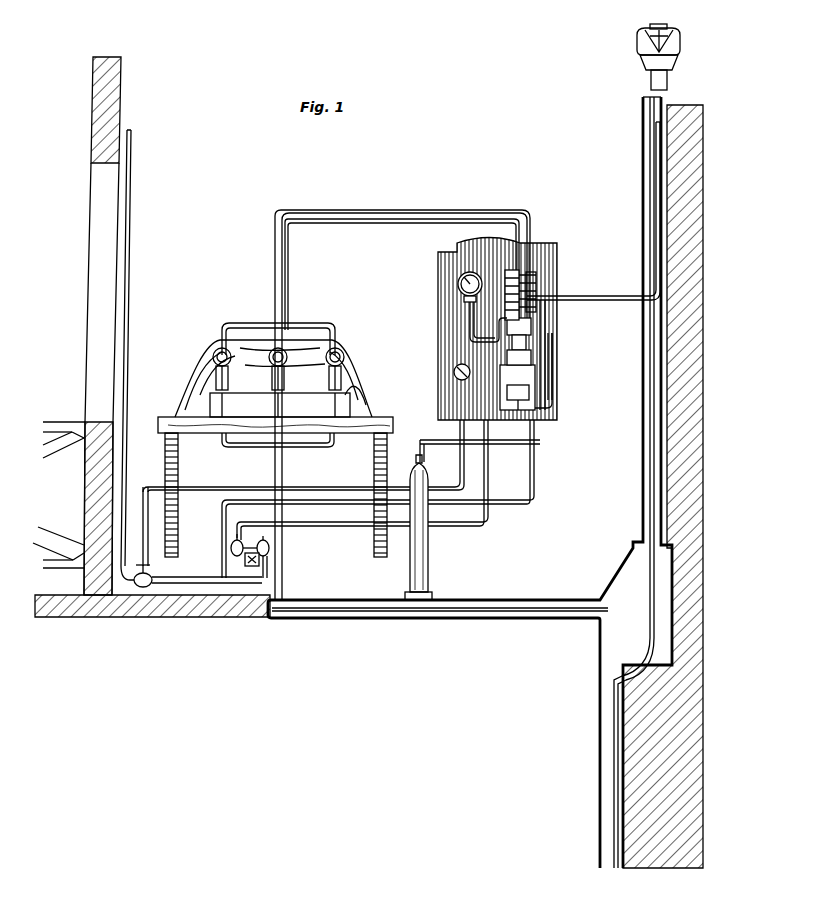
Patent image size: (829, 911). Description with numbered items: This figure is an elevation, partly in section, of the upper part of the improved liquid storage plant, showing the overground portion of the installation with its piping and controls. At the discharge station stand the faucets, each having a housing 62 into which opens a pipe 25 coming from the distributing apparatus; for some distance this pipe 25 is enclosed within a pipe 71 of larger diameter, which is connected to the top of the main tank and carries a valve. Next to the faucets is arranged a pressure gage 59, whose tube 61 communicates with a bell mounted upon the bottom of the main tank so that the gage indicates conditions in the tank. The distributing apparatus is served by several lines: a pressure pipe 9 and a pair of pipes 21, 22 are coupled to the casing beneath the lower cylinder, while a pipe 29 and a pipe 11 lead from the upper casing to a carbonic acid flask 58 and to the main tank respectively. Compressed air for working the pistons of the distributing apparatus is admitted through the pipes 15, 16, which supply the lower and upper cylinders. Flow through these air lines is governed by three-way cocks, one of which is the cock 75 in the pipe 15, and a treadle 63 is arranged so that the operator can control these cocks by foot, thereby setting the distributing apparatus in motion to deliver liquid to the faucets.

The pressure pipe 9 is at (130, 300).
The pipe 11 is at (553, 254).
The pipe 15 is at (467, 528).
The pipe 16 is at (231, 548).
The pipe 21 is at (258, 500).
The pipe 22 is at (657, 160).
The pipe 25 is at (348, 222).
The pipe 29 is at (552, 281).
The carbonic acid flask 58 is at (412, 576).
The pressure gage 59 is at (457, 284).
The tube 61 is at (466, 341).
The housing 62 is at (350, 356).
The treadle 63 is at (260, 565).
The pipe 71 is at (284, 441).
The three-way cock 75 is at (270, 549).